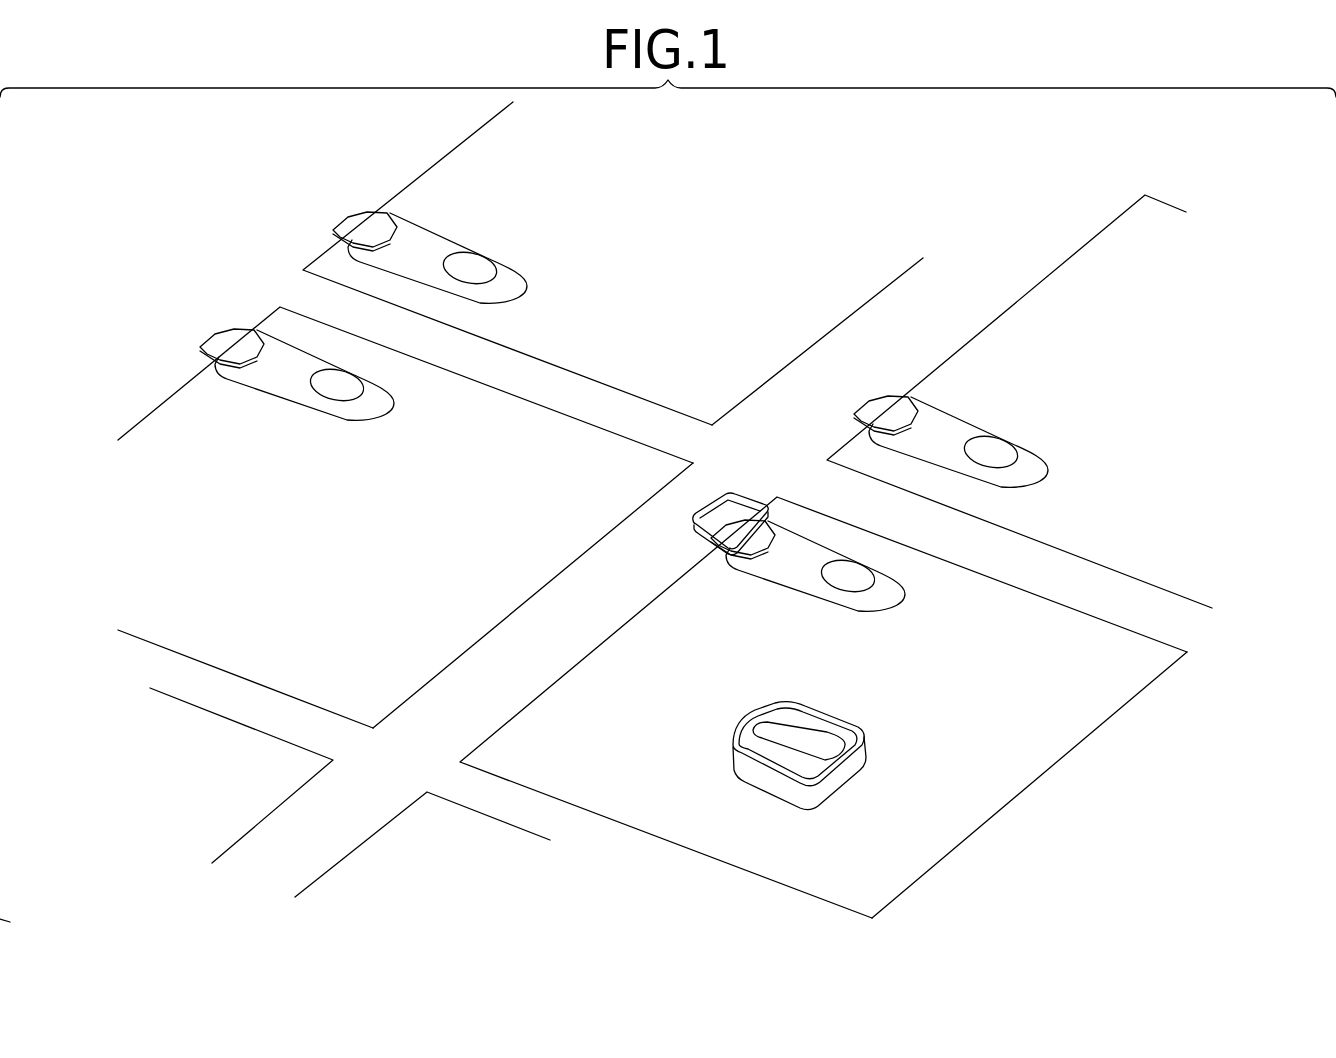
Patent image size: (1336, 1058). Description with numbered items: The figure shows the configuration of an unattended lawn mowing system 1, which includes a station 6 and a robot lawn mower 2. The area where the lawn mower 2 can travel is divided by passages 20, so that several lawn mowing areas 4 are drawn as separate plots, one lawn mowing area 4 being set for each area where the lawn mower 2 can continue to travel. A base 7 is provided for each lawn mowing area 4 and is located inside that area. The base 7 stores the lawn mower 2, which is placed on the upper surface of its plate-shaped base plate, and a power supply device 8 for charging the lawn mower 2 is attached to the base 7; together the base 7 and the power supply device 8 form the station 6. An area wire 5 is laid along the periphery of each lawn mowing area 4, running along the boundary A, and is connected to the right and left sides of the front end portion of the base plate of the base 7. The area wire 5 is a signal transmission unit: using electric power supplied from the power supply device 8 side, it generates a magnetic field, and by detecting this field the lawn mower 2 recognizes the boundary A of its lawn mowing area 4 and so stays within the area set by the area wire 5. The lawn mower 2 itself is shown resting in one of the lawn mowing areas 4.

The unattended lawn mowing system 1 is at (804, 184).
The robot lawn mower 2 is at (843, 713).
The lawn mowing area 4 is at (625, 232).
The area wire 5 is at (447, 156).
The station 6 is at (752, 484).
The base 7 is at (364, 209).
The power supply device 8 is at (732, 494).
The passage 20 is at (593, 587).
The boundary A is at (783, 370).